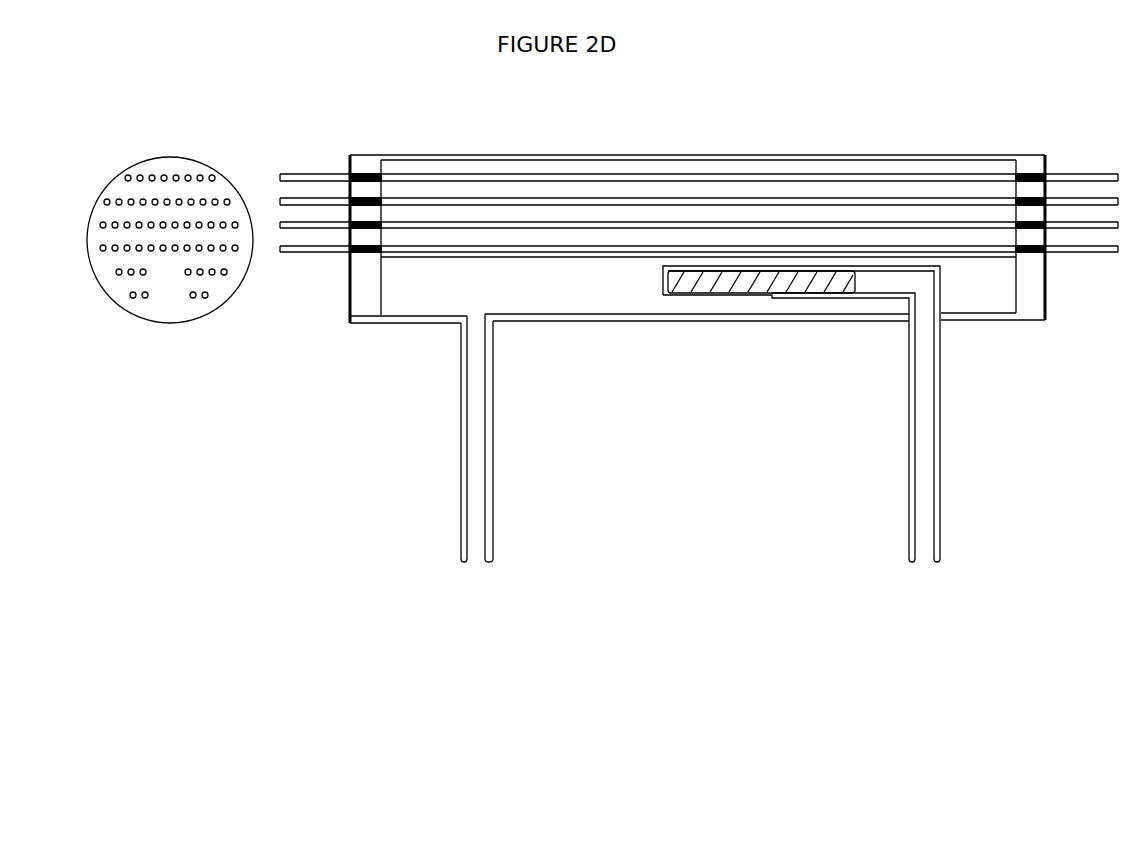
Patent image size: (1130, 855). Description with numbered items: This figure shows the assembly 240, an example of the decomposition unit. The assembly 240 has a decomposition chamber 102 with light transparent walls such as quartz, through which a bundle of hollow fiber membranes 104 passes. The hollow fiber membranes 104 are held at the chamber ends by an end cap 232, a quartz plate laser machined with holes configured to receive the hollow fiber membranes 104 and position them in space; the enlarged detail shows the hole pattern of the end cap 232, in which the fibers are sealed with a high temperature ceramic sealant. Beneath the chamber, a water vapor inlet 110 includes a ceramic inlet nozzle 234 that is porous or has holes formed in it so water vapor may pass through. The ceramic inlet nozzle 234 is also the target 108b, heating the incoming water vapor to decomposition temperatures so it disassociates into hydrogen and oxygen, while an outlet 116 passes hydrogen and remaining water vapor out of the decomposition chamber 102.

The assembly 240 is at (380, 128).
The hollow fiber membranes 104 is at (822, 173).
The end cap 232 is at (195, 305).
The decomposition chamber 102 is at (583, 324).
The outlet 116 is at (462, 522).
The water vapor inlet 110 is at (942, 415).
The ceramic inlet nozzle 234 is at (761, 379).
The target 108b is at (728, 300).